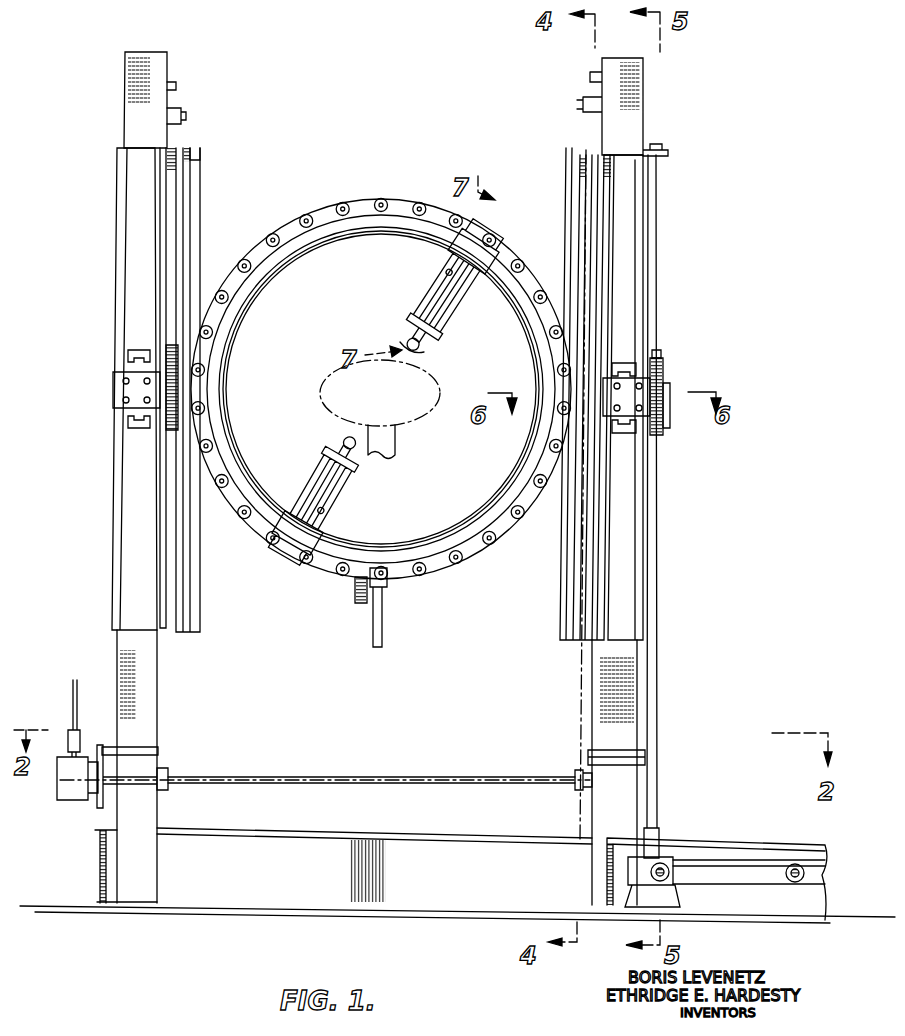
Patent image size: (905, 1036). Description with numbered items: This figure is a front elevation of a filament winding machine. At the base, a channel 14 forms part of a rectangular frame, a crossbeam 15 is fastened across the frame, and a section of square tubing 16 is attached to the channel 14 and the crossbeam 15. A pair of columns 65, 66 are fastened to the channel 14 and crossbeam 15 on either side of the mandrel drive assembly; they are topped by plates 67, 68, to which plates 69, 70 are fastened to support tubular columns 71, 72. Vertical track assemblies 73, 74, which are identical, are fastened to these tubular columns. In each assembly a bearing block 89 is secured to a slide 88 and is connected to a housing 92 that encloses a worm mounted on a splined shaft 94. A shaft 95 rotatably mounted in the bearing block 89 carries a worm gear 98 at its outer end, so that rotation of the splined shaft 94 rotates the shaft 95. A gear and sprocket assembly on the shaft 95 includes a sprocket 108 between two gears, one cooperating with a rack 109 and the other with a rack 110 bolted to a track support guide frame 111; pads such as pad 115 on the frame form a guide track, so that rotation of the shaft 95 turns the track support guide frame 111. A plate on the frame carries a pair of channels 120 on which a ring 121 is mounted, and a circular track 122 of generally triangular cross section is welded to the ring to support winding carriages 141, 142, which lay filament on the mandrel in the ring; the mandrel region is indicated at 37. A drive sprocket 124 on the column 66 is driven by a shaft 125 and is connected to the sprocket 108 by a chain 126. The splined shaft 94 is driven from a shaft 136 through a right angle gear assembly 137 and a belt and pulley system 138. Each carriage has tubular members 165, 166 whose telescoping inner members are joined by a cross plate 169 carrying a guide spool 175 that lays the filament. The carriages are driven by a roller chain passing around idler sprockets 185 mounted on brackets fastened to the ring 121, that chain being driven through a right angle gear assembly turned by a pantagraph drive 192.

The channel 14 is at (100, 878).
The crossbeam 15 is at (607, 880).
The square tubing 16 is at (340, 832).
The workpiece 37 is at (322, 408).
The column 65 is at (117, 826).
The column 66 is at (600, 832).
The plate 67 is at (160, 758).
The plate 68 is at (590, 766).
The plate 69 is at (160, 746).
The plate 70 is at (588, 754).
The tubular column 71 is at (165, 713).
The tubular column 72 is at (595, 712).
The vertical track assembly 73 is at (110, 580).
The vertical track assembly 74 is at (652, 577).
The slide 88 is at (134, 356).
The bearing block 89 is at (120, 398).
The housing 92 is at (665, 380).
The splined shaft 94 is at (655, 712).
The shaft 95 is at (668, 390).
The worm gear 98 is at (662, 356).
The sprocket 108 is at (566, 378).
The rack 109 is at (172, 150).
The rack 110 is at (584, 152).
The track support guide frame 111 is at (202, 163).
The pad 115 is at (196, 152).
The channel 120 is at (566, 392).
The ring 121 is at (513, 258).
The circular track 122 is at (520, 490).
The drive sprocket 124 is at (580, 790).
The shaft 125 is at (348, 781).
The chain 126 is at (583, 680).
The shaft 136 is at (798, 865).
The right angle gear assembly 137 is at (660, 860).
The belt and pulley system 138 is at (730, 852).
The winding carriage 141 is at (412, 284).
The winding carriage 142 is at (340, 497).
The tubular member 165 is at (400, 338).
The tubular member 166 is at (452, 320).
The cross plate 169 is at (430, 346).
The guide spool 175 is at (422, 355).
The idler sprocket 185 is at (347, 203).
The pantagraph drive 192 is at (385, 628).